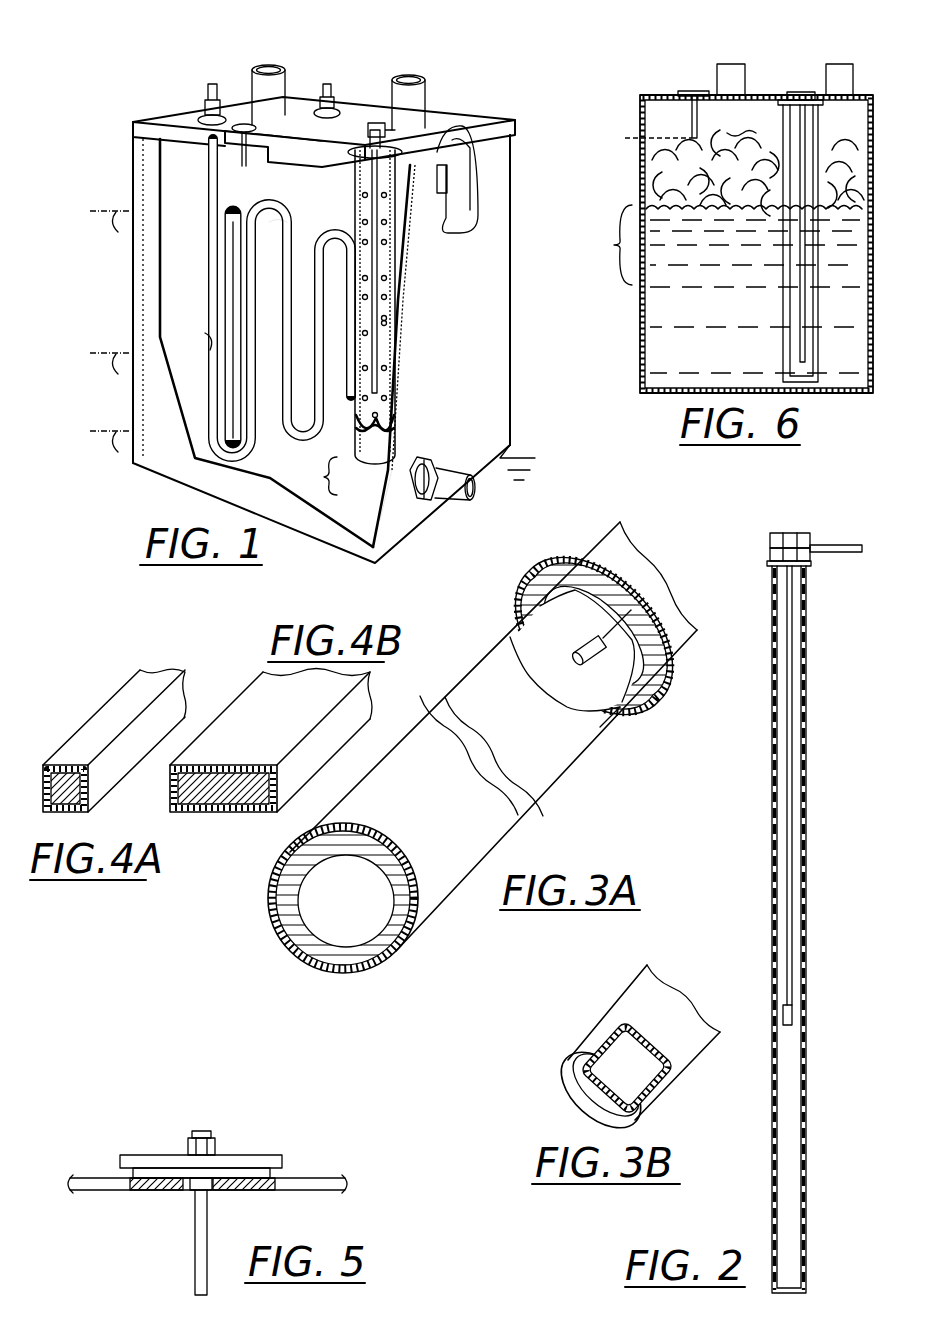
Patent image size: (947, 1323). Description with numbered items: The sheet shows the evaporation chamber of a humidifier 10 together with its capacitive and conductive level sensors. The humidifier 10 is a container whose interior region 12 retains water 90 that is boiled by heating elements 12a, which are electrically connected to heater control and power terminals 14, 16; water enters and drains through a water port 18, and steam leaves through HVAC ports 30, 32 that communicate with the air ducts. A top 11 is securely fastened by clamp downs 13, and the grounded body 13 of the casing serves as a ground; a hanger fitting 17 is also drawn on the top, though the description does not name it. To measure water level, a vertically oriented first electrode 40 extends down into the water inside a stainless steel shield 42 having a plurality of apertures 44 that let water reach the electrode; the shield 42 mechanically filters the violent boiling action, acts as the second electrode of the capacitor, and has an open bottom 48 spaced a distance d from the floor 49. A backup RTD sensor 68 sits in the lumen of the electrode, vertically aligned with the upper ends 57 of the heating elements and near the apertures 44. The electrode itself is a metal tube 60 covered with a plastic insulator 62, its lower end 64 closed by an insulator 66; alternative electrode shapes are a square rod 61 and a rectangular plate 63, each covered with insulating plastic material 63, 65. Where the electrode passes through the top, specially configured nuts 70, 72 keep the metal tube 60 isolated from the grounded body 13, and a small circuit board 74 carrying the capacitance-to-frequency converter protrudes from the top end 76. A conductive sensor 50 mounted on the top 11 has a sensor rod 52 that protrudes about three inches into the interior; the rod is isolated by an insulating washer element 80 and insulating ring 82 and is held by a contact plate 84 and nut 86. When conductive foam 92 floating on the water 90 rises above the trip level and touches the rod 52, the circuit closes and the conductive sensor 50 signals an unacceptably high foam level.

In FIG. 1, the humidifier 10 is at (126, 182).
In FIG. 6, the humidifier 10 is at (875, 160).
In FIG. 1, the top 11 is at (158, 116).
In FIG. 5, the top 11 is at (92, 1176).
In FIG. 1, the interior region 12 is at (283, 223).
In FIG. 6, the interior region 12 is at (741, 119).
In FIG. 1, the heating elements 12a is at (205, 333).
In FIG. 1, the clamp downs 13 is at (133, 163).
In FIG. 1, the heater control and power terminal 14 is at (212, 92).
In FIG. 1, the heater control and power terminal 16 is at (328, 96).
In FIG. 1, the hanger bracket 17 is at (482, 143).
In FIG. 1, the water port 18 is at (455, 501).
In FIG. 1, the HVAC port 30 is at (253, 70).
In FIG. 1, the HVAC port 32 is at (393, 80).
In FIG. 1, the first electrode 40 is at (410, 293).
In FIG. 6, the first electrode 40 is at (806, 140).
In FIG. 2, the first electrode 40 is at (803, 890).
In FIG. 3A, the first electrode 40 is at (488, 752).
In FIG. 3B, the first electrode 40 is at (609, 1048).
In FIG. 1, the shield 42 is at (390, 316).
In FIG. 1, the aperture 44 is at (386, 275).
In FIG. 1, the open bottom 48 is at (398, 478).
In FIG. 1, the floor 49 is at (368, 522).
In FIG. 1, the conductive sensor 50 is at (275, 116).
In FIG. 6, the conductive sensor 50 is at (700, 92).
In FIG. 5, the conductive sensor 50 is at (227, 1193).
In FIG. 1, the sensor rod 52 is at (244, 158).
In FIG. 5, the sensor rod 52 is at (192, 1222).
In FIG. 1, the upper ends 57 is at (286, 224).
In FIG. 3A, the metal tube 60 is at (412, 905).
In FIG. 4A, the square rod 61 is at (114, 755).
In FIG. 3A, the plastic insulator 62 is at (395, 950).
In FIG. 4A, the rectangular plate 63 is at (80, 745).
In FIG. 4B, the rectangular plate 63 is at (218, 800).
In FIG. 3B, the lower end 64 is at (652, 1078).
In FIG. 4B, the insulating plastic material 65 is at (271, 753).
In FIG. 3B, the insulator 66 is at (572, 1097).
In FIG. 2, the RTD sensor 68 is at (793, 1013).
In FIG. 3A, the RTD sensor 68 is at (608, 648).
In FIG. 2, the nut 70 is at (770, 549).
In FIG. 2, the nut 72 is at (774, 533).
In FIG. 2, the circuit board 74 is at (842, 545).
In FIG. 2, the top end 76 is at (799, 533).
In FIG. 5, the insulating washer element 80 is at (272, 1172).
In FIG. 5, the insulating ring 82 is at (232, 1191).
In FIG. 5, the contact plate 84 is at (253, 1155).
In FIG. 5, the nut 86 is at (214, 1146).
In FIG. 6, the water 90 is at (848, 266).
In FIG. 6, the foam 92 is at (656, 160).